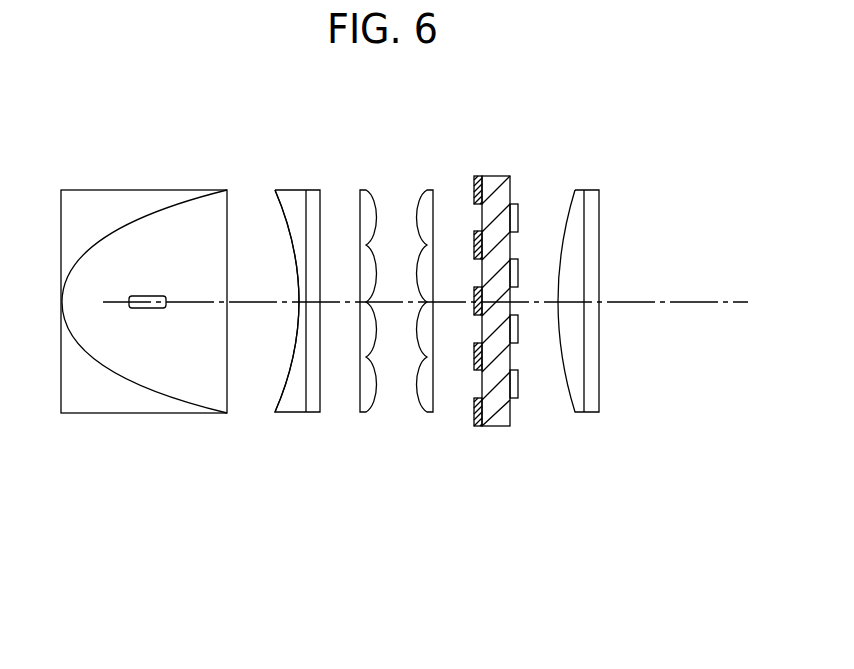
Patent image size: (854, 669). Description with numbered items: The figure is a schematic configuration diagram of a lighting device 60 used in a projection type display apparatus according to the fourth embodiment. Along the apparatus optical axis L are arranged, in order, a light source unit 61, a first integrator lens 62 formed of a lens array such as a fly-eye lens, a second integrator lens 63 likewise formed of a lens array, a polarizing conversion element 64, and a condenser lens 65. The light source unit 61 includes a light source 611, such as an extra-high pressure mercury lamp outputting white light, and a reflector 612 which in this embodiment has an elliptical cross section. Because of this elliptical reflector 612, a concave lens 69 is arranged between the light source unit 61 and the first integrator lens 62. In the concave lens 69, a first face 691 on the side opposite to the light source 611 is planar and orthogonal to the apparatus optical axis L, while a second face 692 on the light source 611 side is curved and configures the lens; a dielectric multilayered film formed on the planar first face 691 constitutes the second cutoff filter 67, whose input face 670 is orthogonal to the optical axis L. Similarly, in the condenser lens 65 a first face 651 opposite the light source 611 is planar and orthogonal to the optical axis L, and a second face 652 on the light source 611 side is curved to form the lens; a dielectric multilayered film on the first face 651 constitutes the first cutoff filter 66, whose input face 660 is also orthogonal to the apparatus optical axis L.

The lighting device 60 is at (654, 163).
The light source unit 61 is at (165, 135).
The light source 611 is at (150, 296).
The reflector 612 is at (106, 237).
The first integrator lens 62 is at (364, 199).
The second integrator lens 63 is at (429, 199).
The polarizing conversion element 64 is at (496, 182).
The condenser lens 65 is at (580, 200).
The first face 651 is at (587, 325).
The second face 652 is at (564, 368).
The first cutoff filter 66 is at (594, 403).
The input face 660 is at (580, 370).
The second cutoff filter 67 is at (315, 413).
The input face 670 is at (301, 370).
The concave lens 69 is at (287, 196).
The first face 691 is at (310, 330).
The second face 692 is at (285, 225).
The apparatus optical axis L is at (668, 302).